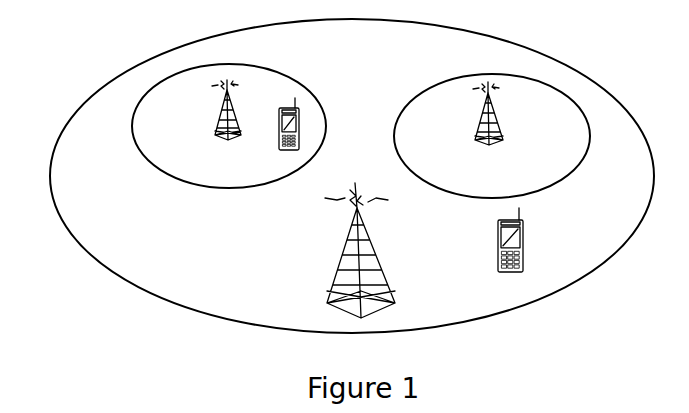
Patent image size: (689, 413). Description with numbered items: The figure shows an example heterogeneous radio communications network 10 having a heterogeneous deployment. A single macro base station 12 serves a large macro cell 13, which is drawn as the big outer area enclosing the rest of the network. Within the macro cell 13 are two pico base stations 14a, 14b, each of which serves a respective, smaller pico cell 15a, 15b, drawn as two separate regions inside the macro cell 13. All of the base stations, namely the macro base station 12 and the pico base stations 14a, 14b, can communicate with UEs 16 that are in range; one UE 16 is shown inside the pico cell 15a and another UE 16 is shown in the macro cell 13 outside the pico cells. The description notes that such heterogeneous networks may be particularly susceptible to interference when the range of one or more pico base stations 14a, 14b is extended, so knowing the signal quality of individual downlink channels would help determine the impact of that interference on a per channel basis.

The wireless communication system 10 is at (112, 66).
The macro base station 12 is at (377, 271).
The macro cell 13 is at (238, 273).
The pico base station 14a is at (214, 122).
The pico base station 14b is at (497, 116).
The pico cell 15a is at (242, 176).
The pico cell 15b is at (508, 176).
The UE 16 is at (300, 124).